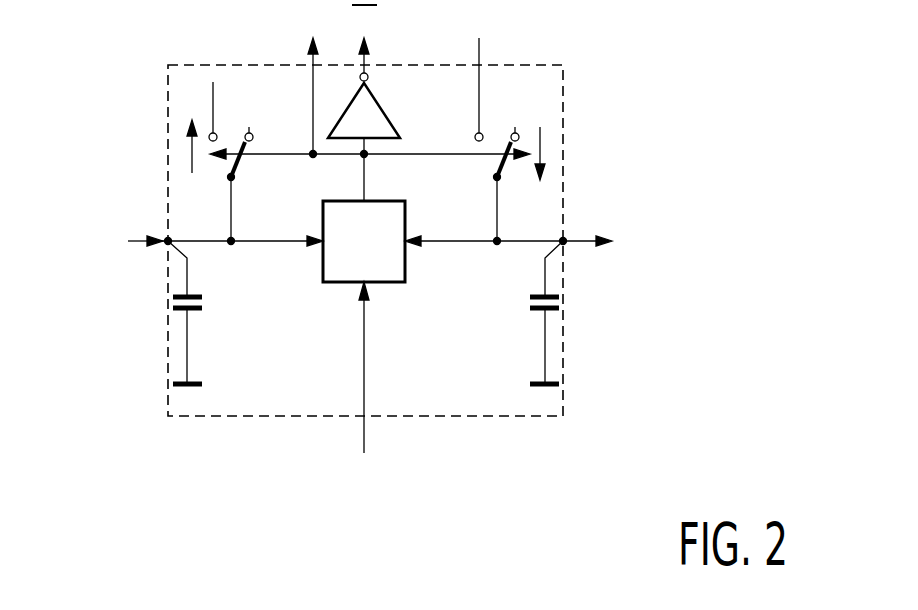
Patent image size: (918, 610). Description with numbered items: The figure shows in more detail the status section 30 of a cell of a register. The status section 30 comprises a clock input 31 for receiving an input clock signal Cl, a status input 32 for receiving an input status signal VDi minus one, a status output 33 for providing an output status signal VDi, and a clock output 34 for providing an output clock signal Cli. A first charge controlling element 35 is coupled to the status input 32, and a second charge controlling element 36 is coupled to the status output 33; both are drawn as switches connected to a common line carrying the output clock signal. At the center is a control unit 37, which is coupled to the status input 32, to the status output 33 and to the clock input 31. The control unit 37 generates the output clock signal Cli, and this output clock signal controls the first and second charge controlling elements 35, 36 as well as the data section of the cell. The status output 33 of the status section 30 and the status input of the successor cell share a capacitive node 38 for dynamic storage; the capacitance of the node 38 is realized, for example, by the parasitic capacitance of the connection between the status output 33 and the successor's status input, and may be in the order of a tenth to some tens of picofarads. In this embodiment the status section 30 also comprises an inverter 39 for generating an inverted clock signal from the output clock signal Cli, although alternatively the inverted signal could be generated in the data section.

The status section 30 is at (564, 352).
The clock input 31 is at (366, 417).
The status input 32 is at (168, 241).
The status output 33 is at (563, 241).
The clock output 34 is at (313, 62).
The first charge controlling element 35 is at (232, 135).
The second charge controlling element 36 is at (475, 137).
The control unit 37 is at (323, 266).
The capacitive node 38 is at (531, 296).
The inverter 39 is at (392, 122).